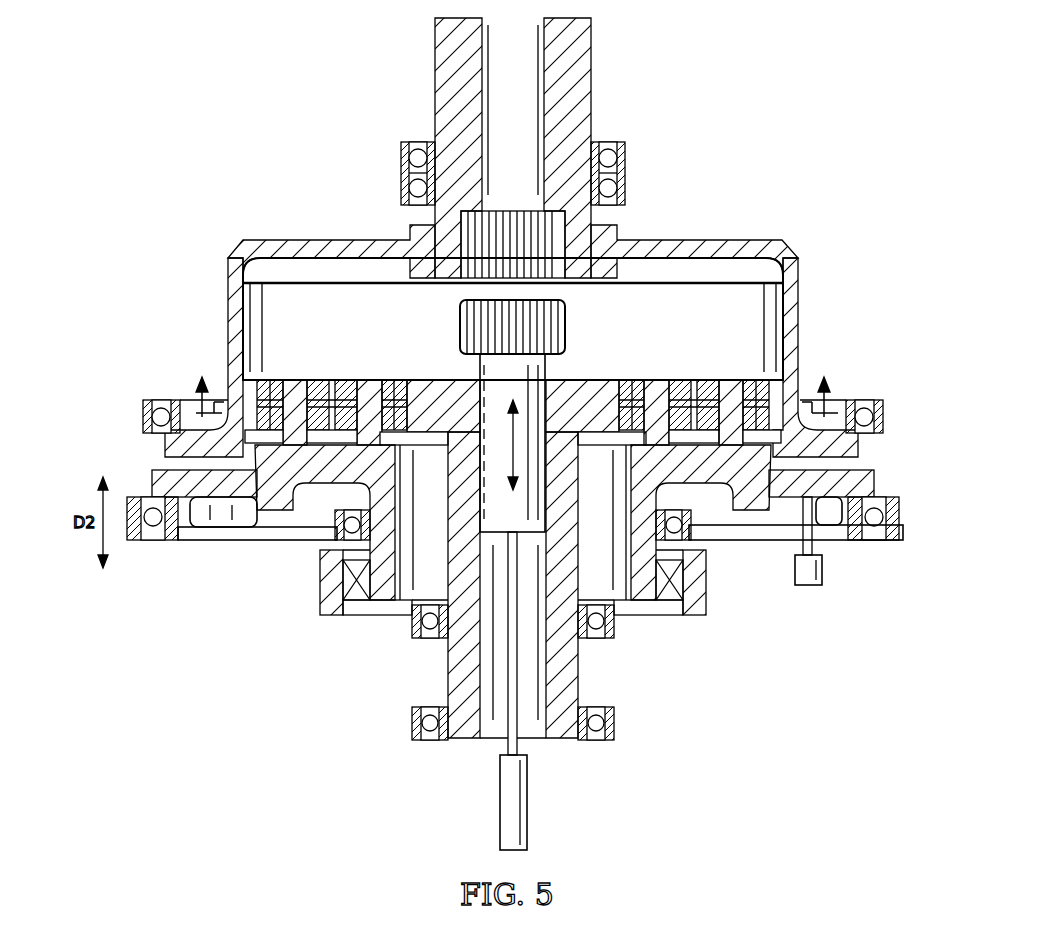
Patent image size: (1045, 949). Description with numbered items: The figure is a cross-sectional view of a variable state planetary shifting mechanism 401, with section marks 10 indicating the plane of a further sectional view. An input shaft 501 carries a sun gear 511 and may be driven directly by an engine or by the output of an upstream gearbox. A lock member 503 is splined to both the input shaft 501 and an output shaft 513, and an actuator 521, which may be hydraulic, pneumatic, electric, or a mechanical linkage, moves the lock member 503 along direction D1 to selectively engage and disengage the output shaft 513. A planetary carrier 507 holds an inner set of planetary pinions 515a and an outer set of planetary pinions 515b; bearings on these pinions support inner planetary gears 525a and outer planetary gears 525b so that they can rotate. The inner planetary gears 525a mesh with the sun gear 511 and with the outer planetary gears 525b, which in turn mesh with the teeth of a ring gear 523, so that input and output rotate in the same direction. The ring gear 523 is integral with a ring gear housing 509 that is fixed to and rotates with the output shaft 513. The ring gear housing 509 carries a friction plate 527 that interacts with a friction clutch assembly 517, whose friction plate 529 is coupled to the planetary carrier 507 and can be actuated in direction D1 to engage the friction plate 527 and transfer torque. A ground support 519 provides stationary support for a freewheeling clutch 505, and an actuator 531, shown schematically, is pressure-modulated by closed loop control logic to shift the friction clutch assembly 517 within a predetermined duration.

The variable state planetary shifting mechanism 401 is at (355, 188).
The input shaft 501 is at (455, 678).
The lock member 503 is at (495, 380).
The freewheeling clutch 505 is at (683, 583).
The planetary carrier 507 is at (735, 475).
The ring gear housing 509 is at (740, 240).
The sun gear 511 is at (582, 392).
The output shaft 513 is at (585, 90).
The inner set of planetary pinions 515a is at (368, 387).
The outer set of planetary pinions 515b is at (293, 387).
The friction clutch assembly 517 is at (214, 570).
The ground support 519 is at (322, 578).
The actuator 521 is at (500, 805).
The ring gear 523 is at (777, 390).
The inner planetary gears 525a is at (687, 387).
The outer planetary gears 525b is at (763, 387).
The friction plate 527 is at (185, 440).
The friction plate 529 is at (158, 480).
The actuator 531 is at (822, 572).
The section line 10 is at (514, 385).